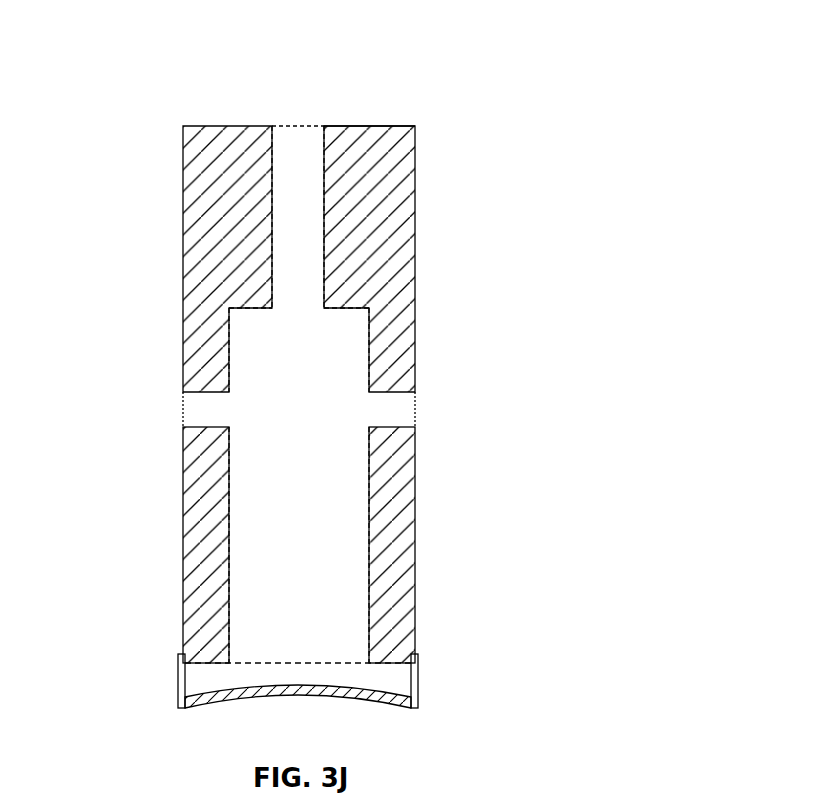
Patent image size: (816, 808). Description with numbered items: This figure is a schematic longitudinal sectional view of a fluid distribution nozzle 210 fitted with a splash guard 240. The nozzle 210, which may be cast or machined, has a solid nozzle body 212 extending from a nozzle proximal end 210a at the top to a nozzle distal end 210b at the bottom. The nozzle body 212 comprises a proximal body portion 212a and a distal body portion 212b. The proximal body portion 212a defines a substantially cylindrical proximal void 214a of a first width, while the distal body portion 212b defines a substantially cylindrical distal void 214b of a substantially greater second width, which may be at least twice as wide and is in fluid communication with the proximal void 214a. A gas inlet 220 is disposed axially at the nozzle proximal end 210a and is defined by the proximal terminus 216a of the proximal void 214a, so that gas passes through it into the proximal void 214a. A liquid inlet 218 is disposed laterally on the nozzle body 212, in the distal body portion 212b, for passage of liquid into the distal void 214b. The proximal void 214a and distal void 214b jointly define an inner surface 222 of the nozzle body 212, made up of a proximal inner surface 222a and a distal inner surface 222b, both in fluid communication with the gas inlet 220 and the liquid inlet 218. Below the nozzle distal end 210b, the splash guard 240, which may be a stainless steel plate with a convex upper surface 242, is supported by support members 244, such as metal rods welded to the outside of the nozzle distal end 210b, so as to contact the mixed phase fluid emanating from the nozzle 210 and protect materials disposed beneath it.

The fluid distribution nozzle 210 is at (423, 70).
The nozzle proximal end 210a is at (175, 130).
The nozzle distal end 210b is at (147, 662).
The nozzle body 212 is at (428, 305).
The proximal body portion 212a is at (182, 217).
The distal body portion 212b is at (183, 457).
The proximal void 214a is at (312, 234).
The distal void 214b is at (317, 502).
The proximal terminus of proximal void 216a is at (325, 125).
The liquid inlet 218 is at (415, 409).
The gas inlet 220 is at (285, 123).
The inner surface 222 is at (230, 367).
The proximal inner surface 222a is at (324, 162).
The distal inner surface 222b is at (228, 565).
The splash guard 240 is at (345, 702).
The convex upper surface 242 is at (330, 683).
The support member 244 is at (422, 678).